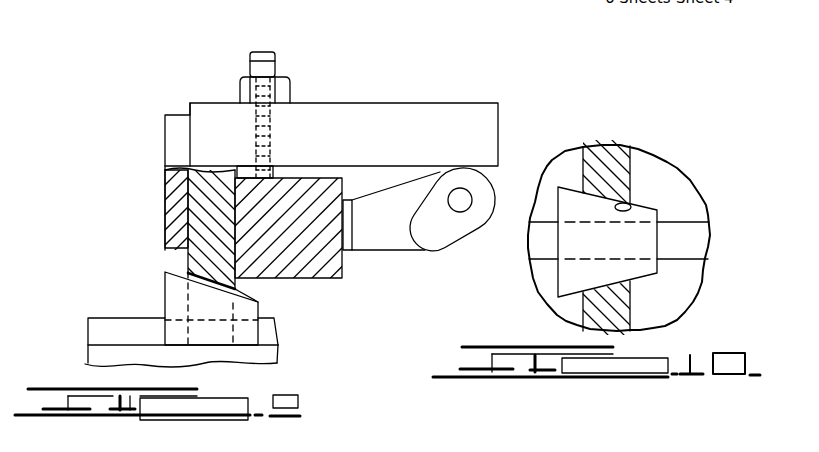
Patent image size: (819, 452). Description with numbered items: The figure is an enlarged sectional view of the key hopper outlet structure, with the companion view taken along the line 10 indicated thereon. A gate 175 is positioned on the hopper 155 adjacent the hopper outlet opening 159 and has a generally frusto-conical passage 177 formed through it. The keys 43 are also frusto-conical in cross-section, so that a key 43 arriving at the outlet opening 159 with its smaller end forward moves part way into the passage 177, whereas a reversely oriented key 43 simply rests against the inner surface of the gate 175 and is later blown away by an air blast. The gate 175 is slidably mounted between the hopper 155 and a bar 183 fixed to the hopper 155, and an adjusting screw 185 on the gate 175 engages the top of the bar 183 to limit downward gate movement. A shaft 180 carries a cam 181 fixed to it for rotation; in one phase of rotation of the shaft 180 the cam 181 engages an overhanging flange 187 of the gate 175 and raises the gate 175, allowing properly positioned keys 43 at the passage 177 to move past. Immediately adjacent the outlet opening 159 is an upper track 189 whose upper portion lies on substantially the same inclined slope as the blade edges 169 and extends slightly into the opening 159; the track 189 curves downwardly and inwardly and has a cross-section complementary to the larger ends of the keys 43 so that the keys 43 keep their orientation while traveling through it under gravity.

In FIG. 9, the adjusting screw 185 is at (275, 63).
In FIG. 9, the overhanging flange 187 is at (304, 107).
In FIG. 9, the hopper 155 is at (158, 128).
In FIG. 9, the hopper outlet opening 159 is at (168, 255).
In FIG. 9, the gate 175 is at (237, 222).
In FIG. 10, the gate 175 is at (622, 165).
In FIG. 9, the frusto-conical passage 177 is at (215, 297).
In FIG. 10, the frusto-conical passage 177 is at (631, 205).
In FIG. 9, the bar 183 is at (340, 222).
In FIG. 9, the shaft 180 is at (468, 197).
In FIG. 9, the cam 181 is at (438, 232).
In FIG. 9, the key 43 is at (167, 292).
In FIG. 10, the key 43 is at (565, 267).
In FIG. 9, the blade edge 169 is at (100, 327).
In FIG. 9, the upper track 189 is at (270, 342).
In FIG. 9, the section line 10— 10 is at (172, 271).